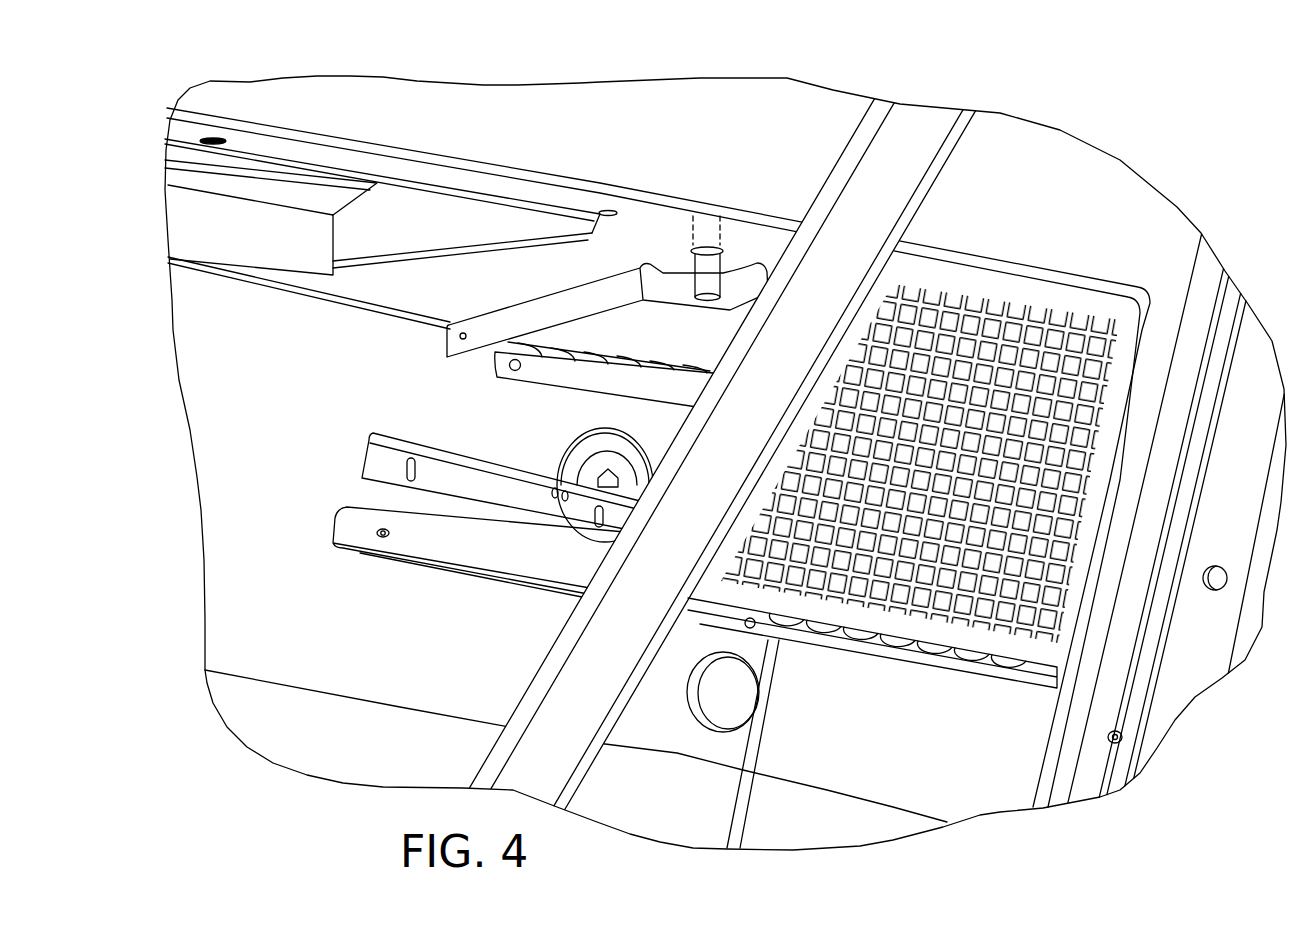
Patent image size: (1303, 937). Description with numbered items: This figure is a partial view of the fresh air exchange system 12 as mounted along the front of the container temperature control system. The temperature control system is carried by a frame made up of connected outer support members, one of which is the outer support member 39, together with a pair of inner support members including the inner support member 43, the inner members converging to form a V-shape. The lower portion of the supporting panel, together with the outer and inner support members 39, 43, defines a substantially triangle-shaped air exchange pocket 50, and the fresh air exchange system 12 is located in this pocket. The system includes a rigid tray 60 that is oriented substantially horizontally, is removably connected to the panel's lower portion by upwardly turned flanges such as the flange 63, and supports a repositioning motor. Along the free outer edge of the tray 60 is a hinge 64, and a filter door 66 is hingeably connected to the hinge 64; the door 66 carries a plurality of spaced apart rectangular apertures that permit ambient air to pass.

The fresh air exchange system 12 is at (455, 597).
The outer support member 39 is at (1107, 767).
The inner support member 43 is at (883, 167).
The air exchange pocket 50 is at (960, 143).
The rigid tray 60 is at (348, 548).
The upwardly turned flange 63 is at (347, 508).
The hinge 64 is at (903, 653).
The filter door 66 is at (1037, 292).